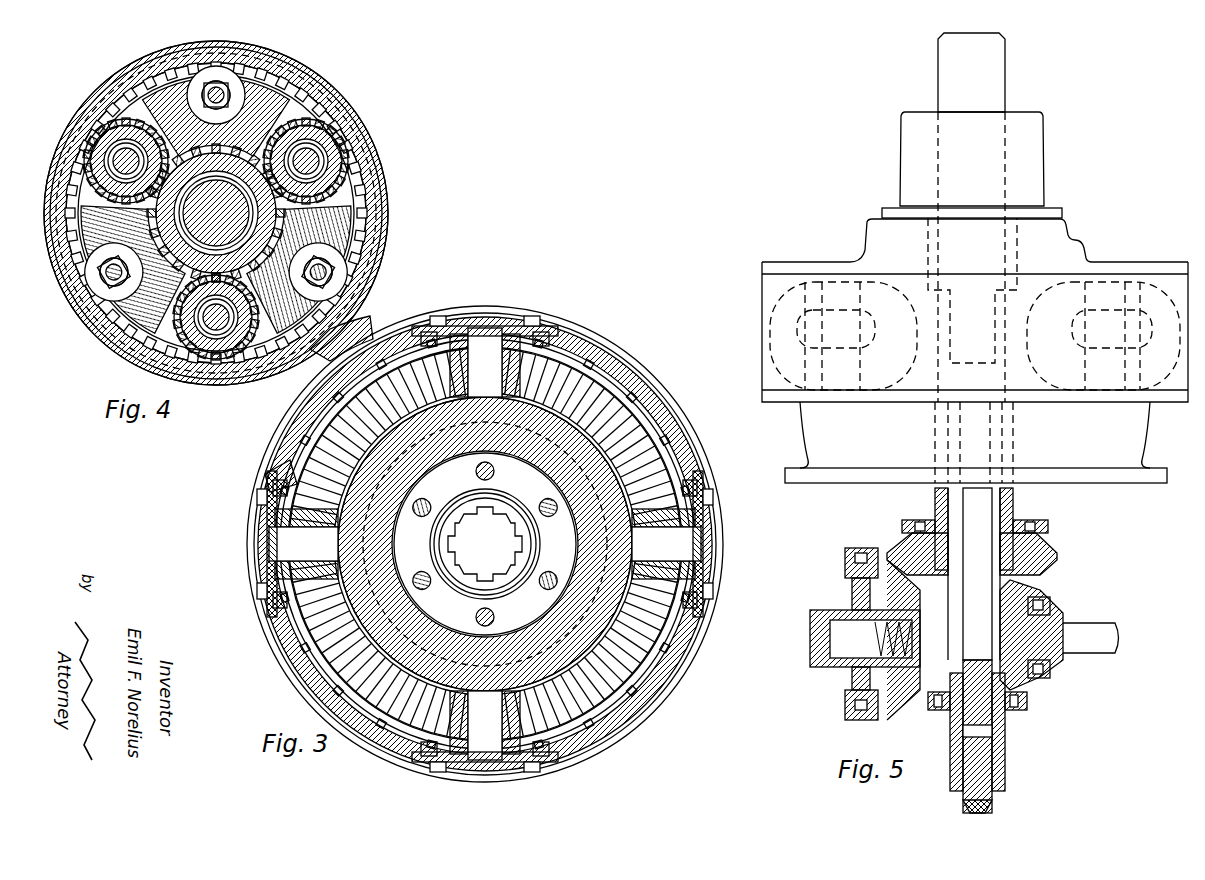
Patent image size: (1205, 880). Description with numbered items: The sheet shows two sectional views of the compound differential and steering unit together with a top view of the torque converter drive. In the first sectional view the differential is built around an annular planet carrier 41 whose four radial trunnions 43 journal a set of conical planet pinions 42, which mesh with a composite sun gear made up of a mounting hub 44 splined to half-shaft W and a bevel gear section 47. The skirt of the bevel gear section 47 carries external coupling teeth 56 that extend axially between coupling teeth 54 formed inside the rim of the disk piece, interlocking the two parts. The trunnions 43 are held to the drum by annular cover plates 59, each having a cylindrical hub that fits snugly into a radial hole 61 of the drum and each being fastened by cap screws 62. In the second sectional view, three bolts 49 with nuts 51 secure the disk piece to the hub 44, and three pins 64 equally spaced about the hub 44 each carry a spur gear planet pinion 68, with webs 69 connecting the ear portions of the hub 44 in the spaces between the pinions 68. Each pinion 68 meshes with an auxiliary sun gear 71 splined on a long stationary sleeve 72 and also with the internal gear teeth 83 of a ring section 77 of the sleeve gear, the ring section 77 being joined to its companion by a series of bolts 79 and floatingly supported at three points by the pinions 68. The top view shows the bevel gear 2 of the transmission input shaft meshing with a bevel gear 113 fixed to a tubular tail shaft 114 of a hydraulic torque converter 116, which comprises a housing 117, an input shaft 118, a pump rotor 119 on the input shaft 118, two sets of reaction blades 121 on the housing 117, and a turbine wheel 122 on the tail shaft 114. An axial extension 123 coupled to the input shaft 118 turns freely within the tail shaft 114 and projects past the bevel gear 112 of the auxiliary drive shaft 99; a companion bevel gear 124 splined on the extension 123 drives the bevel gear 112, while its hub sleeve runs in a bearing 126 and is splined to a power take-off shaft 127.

In FIG. 5, the bevel gear 2 is at (905, 592).
In FIG. 3, the annular planet carrier 41 is at (595, 522).
In FIG. 3, the conical planet pinions 42 is at (485, 544).
In FIG. 3, the radial trunnions 43 is at (490, 333).
In FIG. 3, the mounting hub 44 is at (512, 551).
In FIG. 3, the bevel gear section 47 is at (335, 445).
In FIG. 4, the bolts 49 is at (232, 92).
In FIG. 4, the nut 51 is at (202, 92).
In FIG. 3, the coupling teeth 54 is at (580, 345).
In FIG. 3, the external coupling teeth 56 is at (615, 380).
In FIG. 3, the annular cover plates 59 is at (462, 325).
In FIG. 3, the radial holes 61 is at (415, 348).
In FIG. 3, the cap screws 62 is at (438, 318).
In FIG. 4, the pins 64 is at (110, 155).
In FIG. 4, the spur gear planet pinions 68 is at (105, 130).
In FIG. 4, the webs 69 is at (150, 312).
In FIG. 4, the auxiliary sun gear 71 is at (216, 213).
In FIG. 4, the long sleeve 72 is at (216, 213).
In FIG. 4, the ring section 77 is at (385, 245).
In FIG. 3, the ring section 77 is at (505, 604).
In FIG. 3, the bolts 79 is at (490, 470).
In FIG. 4, the internal gear teeth 83 is at (380, 186).
In FIG. 5, the auxiliary drive shaft 99 is at (1103, 623).
In FIG. 5, the bevel gear 112 is at (1018, 596).
In FIG. 5, the bevel gear 113 is at (905, 548).
In FIG. 5, the tubular shaft 114 is at (1010, 500).
In FIG. 5, the hydraulic torque converter 116 is at (830, 260).
In FIG. 5, the housing 117 is at (1172, 395).
In FIG. 5, the input shaft 118 is at (1000, 80).
In FIG. 5, the pump rotor 119 is at (1064, 290).
In FIG. 5, the reaction blades 121 is at (770, 324).
In FIG. 5, the turbine wheel 122 is at (890, 375).
In FIG. 5, the axial extension 123 is at (965, 610).
In FIG. 5, the companion bevel gear 124 is at (952, 678).
In FIG. 5, the bearing 126 is at (1028, 700).
In FIG. 5, the power take-off shaft 127 is at (993, 808).